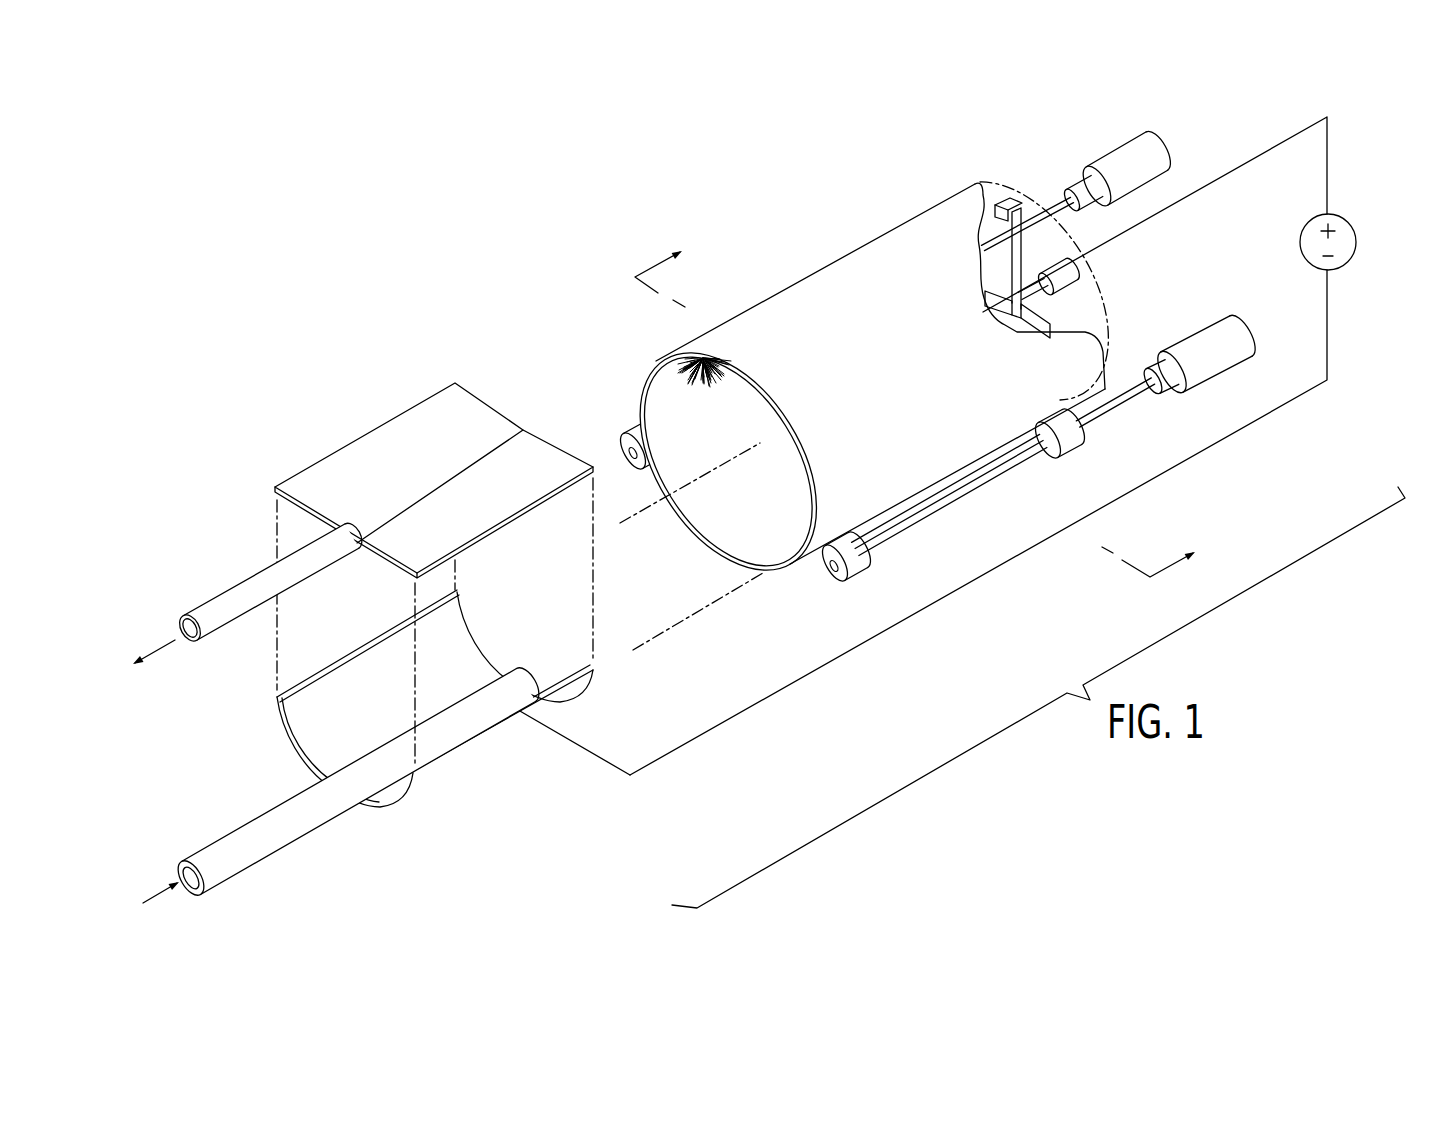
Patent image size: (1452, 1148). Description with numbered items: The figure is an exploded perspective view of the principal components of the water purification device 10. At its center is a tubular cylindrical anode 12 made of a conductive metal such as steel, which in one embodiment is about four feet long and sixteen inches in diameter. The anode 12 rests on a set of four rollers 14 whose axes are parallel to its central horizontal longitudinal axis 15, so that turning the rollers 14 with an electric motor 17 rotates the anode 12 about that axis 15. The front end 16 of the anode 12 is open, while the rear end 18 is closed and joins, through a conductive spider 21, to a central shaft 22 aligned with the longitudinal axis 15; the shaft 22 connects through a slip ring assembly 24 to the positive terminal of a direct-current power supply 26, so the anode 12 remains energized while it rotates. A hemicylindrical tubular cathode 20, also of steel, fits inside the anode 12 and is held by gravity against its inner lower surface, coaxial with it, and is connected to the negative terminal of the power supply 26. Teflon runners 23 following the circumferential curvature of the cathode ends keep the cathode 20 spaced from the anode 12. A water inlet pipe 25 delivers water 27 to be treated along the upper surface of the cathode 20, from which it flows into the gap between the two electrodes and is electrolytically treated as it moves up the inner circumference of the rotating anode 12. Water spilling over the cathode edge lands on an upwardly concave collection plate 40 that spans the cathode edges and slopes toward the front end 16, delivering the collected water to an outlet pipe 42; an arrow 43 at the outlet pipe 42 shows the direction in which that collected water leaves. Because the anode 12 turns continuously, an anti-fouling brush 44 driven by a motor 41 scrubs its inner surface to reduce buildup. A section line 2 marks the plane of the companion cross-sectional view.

The section line 2- 2 is at (924, 404).
The water purification device 10 is at (1362, 128).
The tubular cylindrical anode 12 is at (800, 297).
The rollers 14 is at (628, 436).
The longitudinal axis 15 is at (653, 503).
The front end 16 is at (363, 514).
The electric motor 17 is at (1222, 356).
The rear end 18 is at (1084, 209).
The hemicylindrical tubular cathode 20 is at (471, 733).
The conductive spider 21 is at (1012, 258).
The central shaft 22 is at (1048, 292).
The Teflon runners 23 is at (362, 830).
The slip ring assembly 24 is at (1079, 268).
The water inlet pipe 25 is at (238, 859).
The direct-current power supply 26 is at (1302, 242).
The water 27 is at (165, 885).
The collection plate 40 is at (405, 435).
The motor 41 is at (1108, 153).
The outlet pipe 42 is at (240, 598).
The flow direction 43 is at (160, 647).
The anti-fouling brush 44 is at (682, 368).